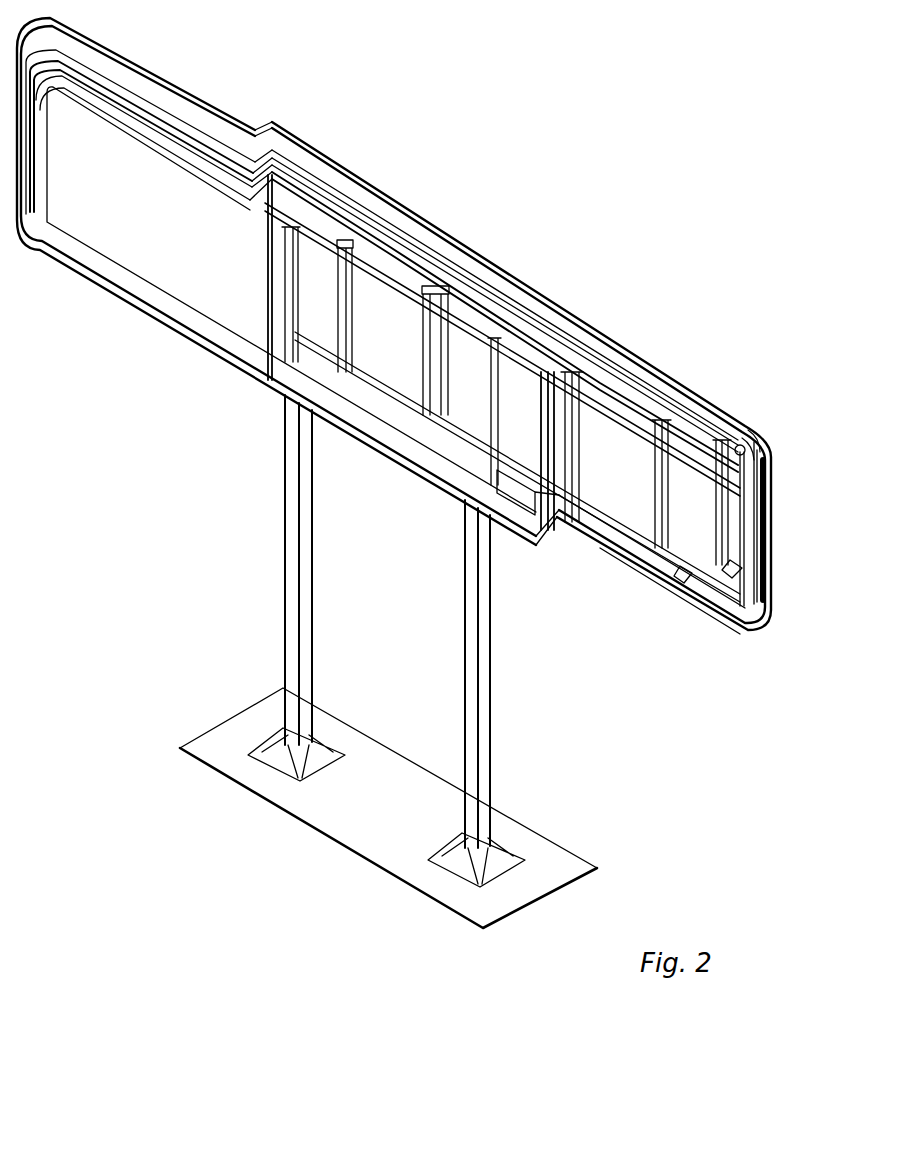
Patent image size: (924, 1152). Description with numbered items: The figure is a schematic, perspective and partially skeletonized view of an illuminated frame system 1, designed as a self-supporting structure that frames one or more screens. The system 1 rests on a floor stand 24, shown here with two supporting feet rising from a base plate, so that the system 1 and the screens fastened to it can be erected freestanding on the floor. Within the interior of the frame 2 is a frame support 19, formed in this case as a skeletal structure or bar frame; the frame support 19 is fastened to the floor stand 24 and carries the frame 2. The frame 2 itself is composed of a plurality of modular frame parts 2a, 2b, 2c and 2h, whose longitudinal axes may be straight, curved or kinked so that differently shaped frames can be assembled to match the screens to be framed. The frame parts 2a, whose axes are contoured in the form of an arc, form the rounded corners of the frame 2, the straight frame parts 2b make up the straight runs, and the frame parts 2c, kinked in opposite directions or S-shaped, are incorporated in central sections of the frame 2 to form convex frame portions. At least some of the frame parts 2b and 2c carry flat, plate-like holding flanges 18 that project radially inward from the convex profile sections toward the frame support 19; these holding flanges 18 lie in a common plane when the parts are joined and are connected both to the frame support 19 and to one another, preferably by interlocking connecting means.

The illuminated frame system 1 is at (628, 298).
The frame 2 is at (712, 384).
The frame part 2a is at (766, 438).
The frame part 2b is at (628, 374).
The frame part 2c is at (532, 298).
The frame part 2h is at (766, 508).
The holding flange 18 is at (736, 566).
The frame support 19 is at (598, 492).
The floor stand 24 is at (528, 788).